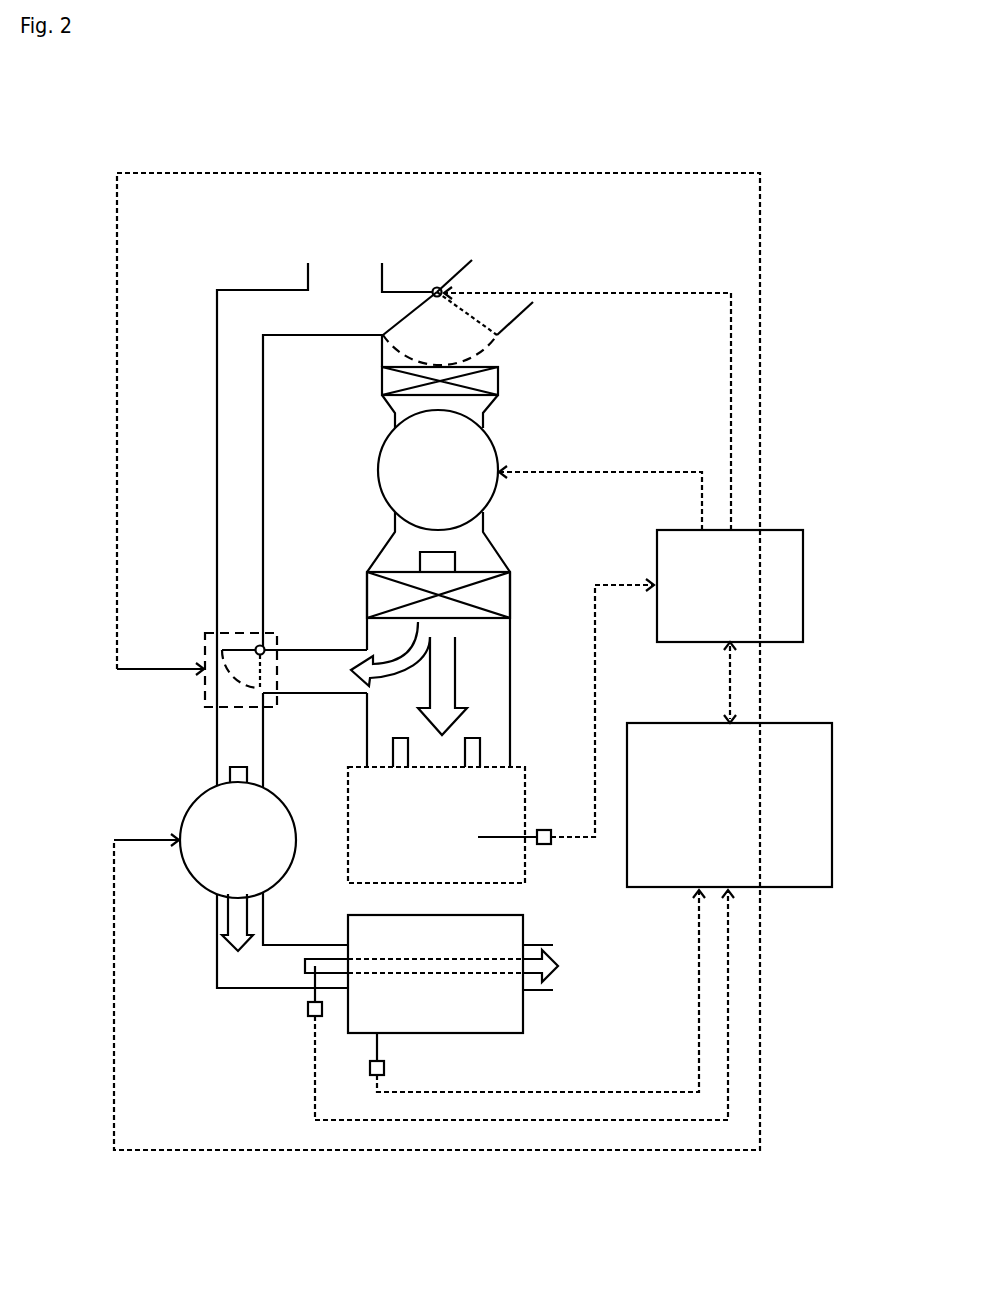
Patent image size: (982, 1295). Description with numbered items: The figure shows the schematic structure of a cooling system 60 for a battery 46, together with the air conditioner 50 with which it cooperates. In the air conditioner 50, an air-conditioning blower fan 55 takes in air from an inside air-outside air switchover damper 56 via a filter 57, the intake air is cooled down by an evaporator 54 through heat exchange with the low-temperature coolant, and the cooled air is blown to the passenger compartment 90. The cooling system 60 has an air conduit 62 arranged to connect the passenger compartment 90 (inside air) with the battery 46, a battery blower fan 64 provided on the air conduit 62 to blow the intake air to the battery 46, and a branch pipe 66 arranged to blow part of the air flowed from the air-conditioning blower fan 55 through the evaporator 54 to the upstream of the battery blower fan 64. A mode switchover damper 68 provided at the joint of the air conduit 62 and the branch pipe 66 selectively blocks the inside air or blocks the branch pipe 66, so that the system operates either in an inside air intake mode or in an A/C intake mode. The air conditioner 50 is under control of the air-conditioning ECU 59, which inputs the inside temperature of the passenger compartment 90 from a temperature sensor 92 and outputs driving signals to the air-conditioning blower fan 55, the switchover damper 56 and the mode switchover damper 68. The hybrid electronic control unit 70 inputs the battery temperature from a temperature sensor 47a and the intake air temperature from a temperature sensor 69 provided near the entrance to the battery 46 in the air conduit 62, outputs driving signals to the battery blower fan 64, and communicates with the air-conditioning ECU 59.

The cooling system 60 is at (601, 148).
The air conditioner 50 is at (617, 412).
The air conduit 62 is at (245, 522).
The inside air-outside air switchover damper 56 is at (418, 294).
The filter 57 is at (498, 383).
The air-conditioning blower fan 55 is at (495, 452).
The evaporator 54 is at (367, 594).
The branch pipe 66 is at (312, 670).
The mode switchover damper 68 is at (240, 652).
The battery blower fan 64 is at (198, 803).
The passenger compartment 90 is at (436, 825).
The temperature sensor 92 is at (544, 829).
The battery 46 is at (523, 926).
The temperature sensor 69 is at (308, 1009).
The temperature sensor 47a is at (384, 1068).
The air-conditioning electronic control unit 59 is at (783, 530).
The hybrid electronic control unit 70 is at (790, 723).